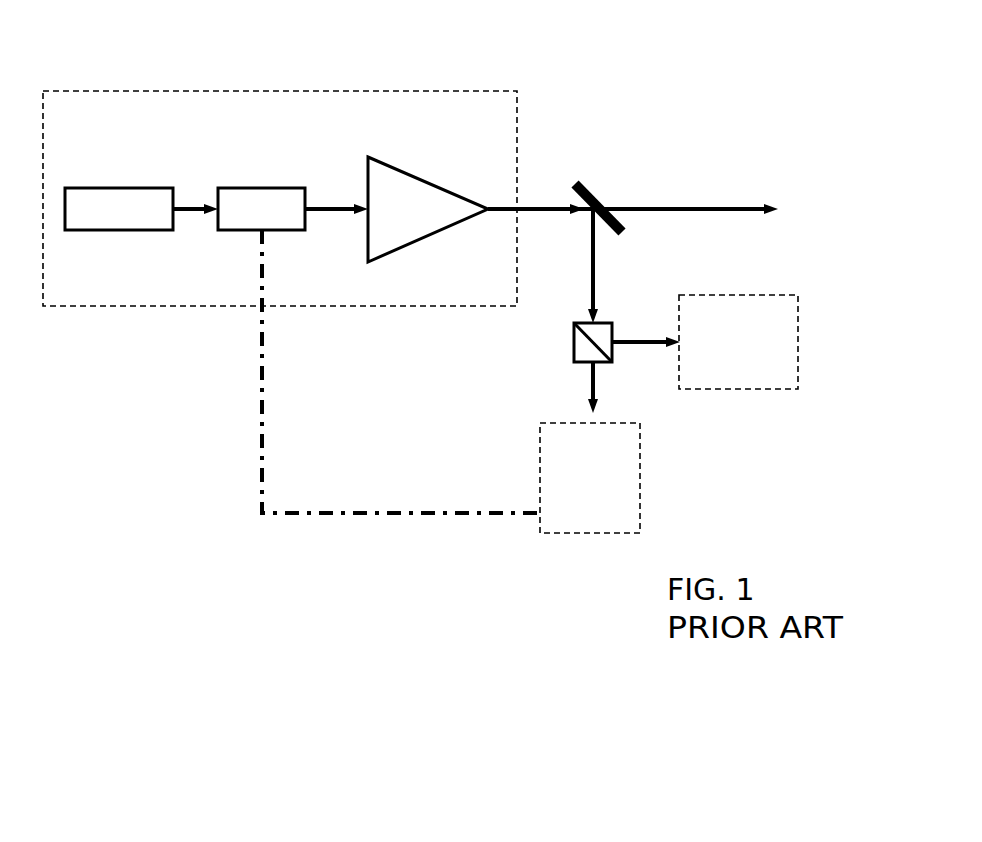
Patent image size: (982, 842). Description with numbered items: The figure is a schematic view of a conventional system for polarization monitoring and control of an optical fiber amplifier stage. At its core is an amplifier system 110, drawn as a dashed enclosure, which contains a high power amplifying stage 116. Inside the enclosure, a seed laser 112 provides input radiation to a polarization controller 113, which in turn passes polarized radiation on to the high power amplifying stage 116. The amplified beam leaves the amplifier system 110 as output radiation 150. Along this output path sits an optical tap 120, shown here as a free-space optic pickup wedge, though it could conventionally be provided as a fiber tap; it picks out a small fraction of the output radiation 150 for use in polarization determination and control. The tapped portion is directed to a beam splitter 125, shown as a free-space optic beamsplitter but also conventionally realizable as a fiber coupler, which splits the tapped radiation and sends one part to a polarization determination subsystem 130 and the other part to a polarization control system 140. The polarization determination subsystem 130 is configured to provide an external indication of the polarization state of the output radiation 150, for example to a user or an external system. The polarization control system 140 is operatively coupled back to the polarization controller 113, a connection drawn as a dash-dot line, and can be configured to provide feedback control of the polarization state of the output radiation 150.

The amplifier system 110 is at (278, 92).
The seed laser 112 is at (99, 222).
The polarization controller 113 is at (241, 222).
The high power amplifying stage 116 is at (392, 222).
The optical tap 120 is at (597, 188).
The beam splitter 125 is at (571, 349).
The polarization determination subsystem 130 is at (768, 390).
The polarization control system 140 is at (541, 462).
The output radiation 150 is at (737, 207).